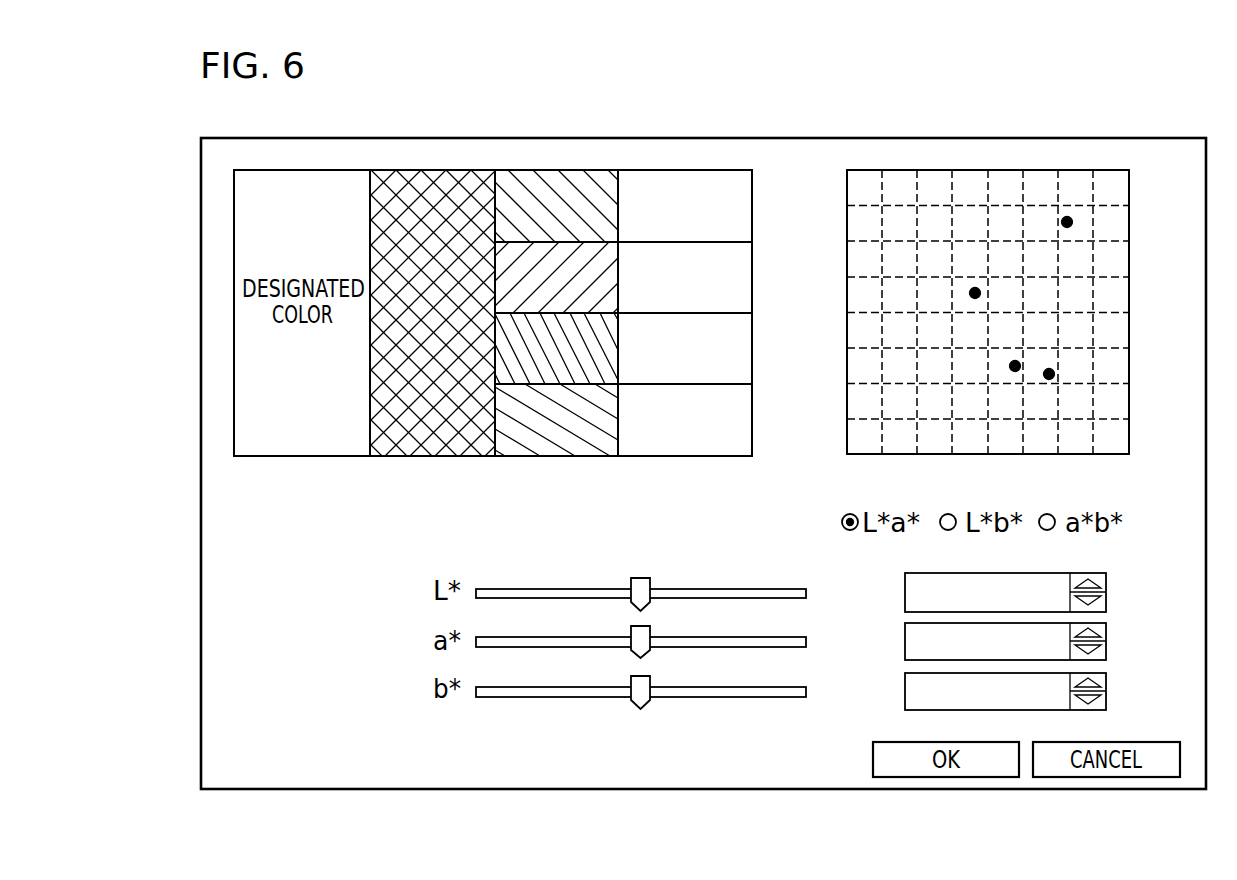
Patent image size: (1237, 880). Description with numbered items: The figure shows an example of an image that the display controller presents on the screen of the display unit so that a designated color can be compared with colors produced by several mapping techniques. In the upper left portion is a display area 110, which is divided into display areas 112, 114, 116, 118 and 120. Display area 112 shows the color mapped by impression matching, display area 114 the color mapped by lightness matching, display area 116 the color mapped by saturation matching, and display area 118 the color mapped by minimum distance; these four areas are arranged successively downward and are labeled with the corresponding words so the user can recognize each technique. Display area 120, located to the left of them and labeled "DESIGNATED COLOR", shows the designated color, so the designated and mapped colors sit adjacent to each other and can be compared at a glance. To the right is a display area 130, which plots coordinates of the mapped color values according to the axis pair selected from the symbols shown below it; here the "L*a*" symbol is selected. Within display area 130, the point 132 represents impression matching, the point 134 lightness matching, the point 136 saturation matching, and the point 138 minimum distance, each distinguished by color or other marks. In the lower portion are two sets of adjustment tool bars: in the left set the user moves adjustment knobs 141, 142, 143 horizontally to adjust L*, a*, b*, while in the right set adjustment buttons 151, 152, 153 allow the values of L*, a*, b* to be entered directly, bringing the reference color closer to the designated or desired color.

The display area 110 is at (549, 153).
The display area 112 is at (605, 183).
The display area 114 is at (605, 255).
The display area 116 is at (605, 327).
The display area 118 is at (605, 397).
The display area 120 is at (437, 187).
The display area 130 is at (937, 166).
The point 132 is at (980, 295).
The point 134 is at (1072, 221).
The point 136 is at (1053, 379).
The point 138 is at (1019, 361).
The adjustment knob 141 is at (647, 582).
The adjustment knob 142 is at (647, 630).
The adjustment knob 143 is at (647, 680).
The adjustment button 151 is at (1108, 592).
The adjustment button 152 is at (1108, 641).
The adjustment button 153 is at (1108, 691).